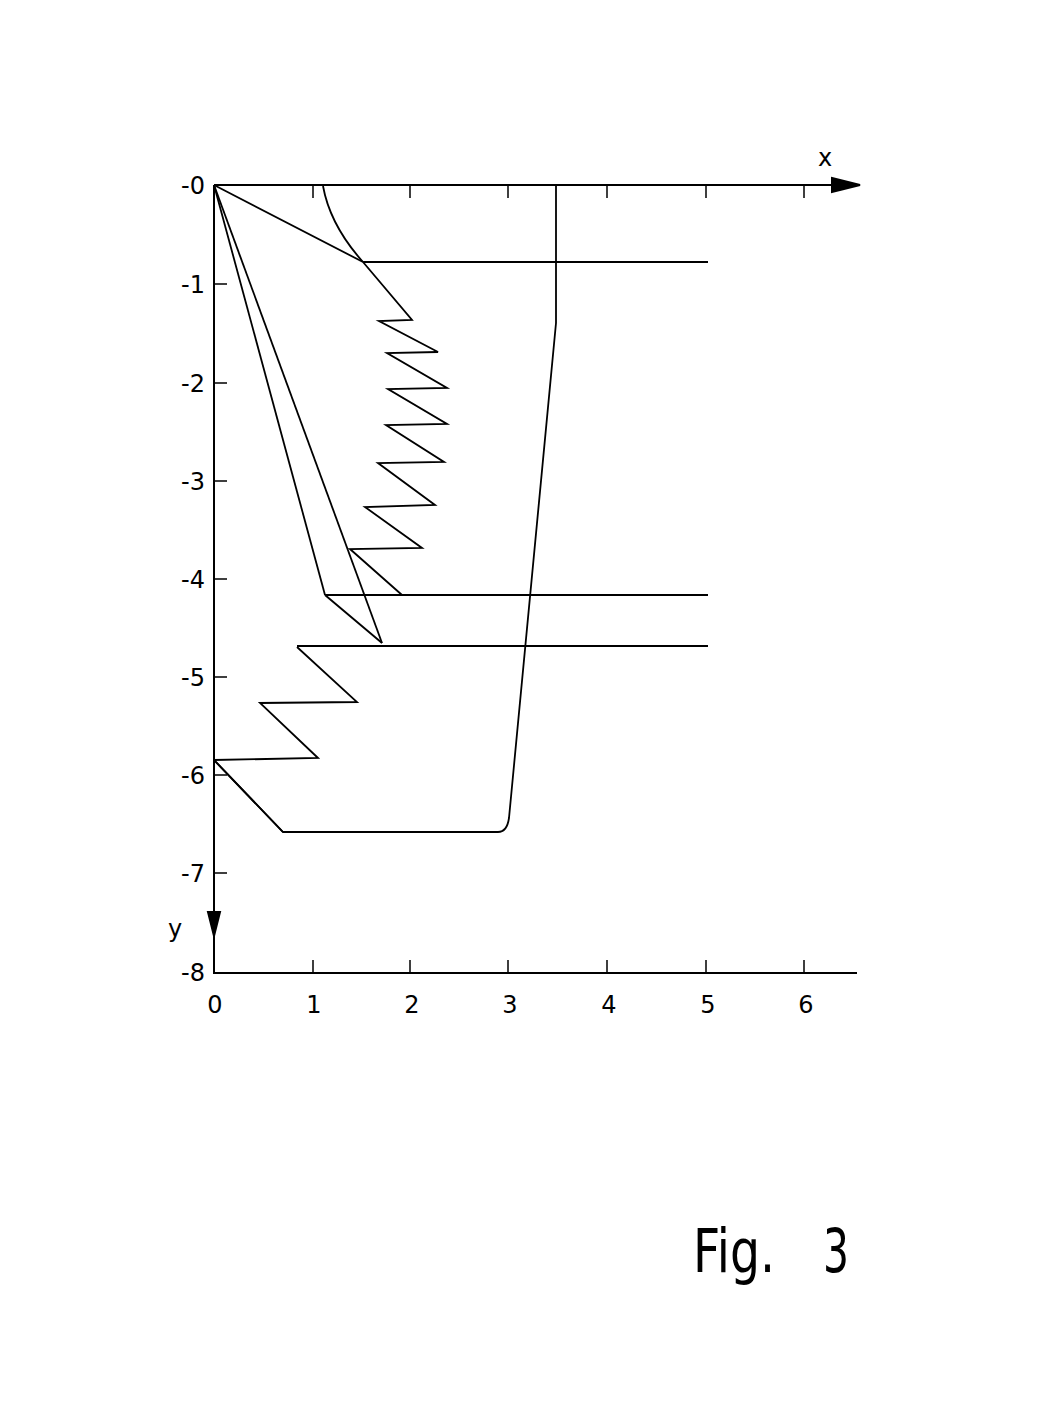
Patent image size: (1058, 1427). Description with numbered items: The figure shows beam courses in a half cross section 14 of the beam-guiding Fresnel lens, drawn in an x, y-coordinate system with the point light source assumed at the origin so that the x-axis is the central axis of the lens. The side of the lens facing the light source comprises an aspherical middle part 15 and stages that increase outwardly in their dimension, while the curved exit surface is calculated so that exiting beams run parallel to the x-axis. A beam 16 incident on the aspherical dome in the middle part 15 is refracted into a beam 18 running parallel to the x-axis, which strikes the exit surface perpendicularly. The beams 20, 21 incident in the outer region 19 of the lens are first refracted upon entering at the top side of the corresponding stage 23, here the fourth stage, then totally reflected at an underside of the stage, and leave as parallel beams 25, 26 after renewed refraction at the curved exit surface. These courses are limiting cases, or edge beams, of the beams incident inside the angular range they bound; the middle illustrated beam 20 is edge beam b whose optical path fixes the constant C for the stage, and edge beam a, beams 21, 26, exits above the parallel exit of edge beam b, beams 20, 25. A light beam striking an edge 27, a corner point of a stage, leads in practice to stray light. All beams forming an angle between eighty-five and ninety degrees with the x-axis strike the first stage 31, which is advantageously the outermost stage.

The half cross section 14 is at (566, 156).
The aspherical middle part 15 is at (412, 246).
The beam 16 is at (275, 216).
The beam 18 is at (470, 262).
The outer region 19 is at (431, 746).
The beam 20 is at (287, 390).
The beam 21 is at (283, 448).
The stage 23 is at (353, 608).
The parallel beam 25 is at (617, 646).
The parallel beam 26 is at (640, 595).
The edge 27 is at (325, 595).
The first stage 31 is at (265, 792).